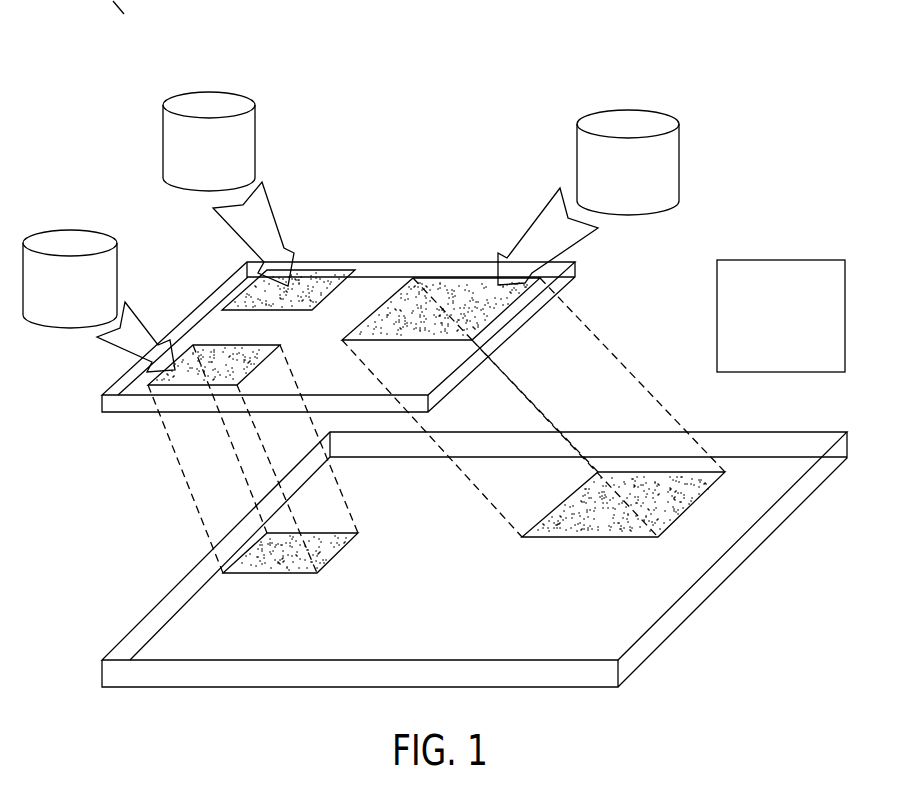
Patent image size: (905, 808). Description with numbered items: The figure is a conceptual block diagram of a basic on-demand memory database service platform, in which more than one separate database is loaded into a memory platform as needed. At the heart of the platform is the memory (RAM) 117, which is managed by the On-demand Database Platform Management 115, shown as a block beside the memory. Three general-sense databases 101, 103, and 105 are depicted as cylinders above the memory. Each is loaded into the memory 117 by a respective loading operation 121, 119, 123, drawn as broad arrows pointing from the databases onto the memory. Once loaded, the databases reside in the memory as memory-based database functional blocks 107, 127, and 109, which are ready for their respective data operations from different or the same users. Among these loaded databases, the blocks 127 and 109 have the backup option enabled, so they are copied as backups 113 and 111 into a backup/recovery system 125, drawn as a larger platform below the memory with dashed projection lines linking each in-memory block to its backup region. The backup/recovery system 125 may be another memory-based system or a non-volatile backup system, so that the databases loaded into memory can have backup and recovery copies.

The database 101 is at (209, 89).
The database 103 is at (77, 228).
The database 105 is at (682, 163).
The memory-based database functional block 107 is at (313, 280).
The memory-based database functional block 109 is at (452, 288).
The backup 111 is at (678, 497).
The backup 113 is at (277, 560).
The On-demand Database Platform Management 115 is at (785, 258).
The memory (RAM) 117 is at (378, 282).
The loading 119 is at (141, 334).
The loading 121 is at (263, 212).
The loading 123 is at (558, 237).
The backup/recovery system 125 is at (630, 620).
The memory-based database functional block 127 is at (143, 371).